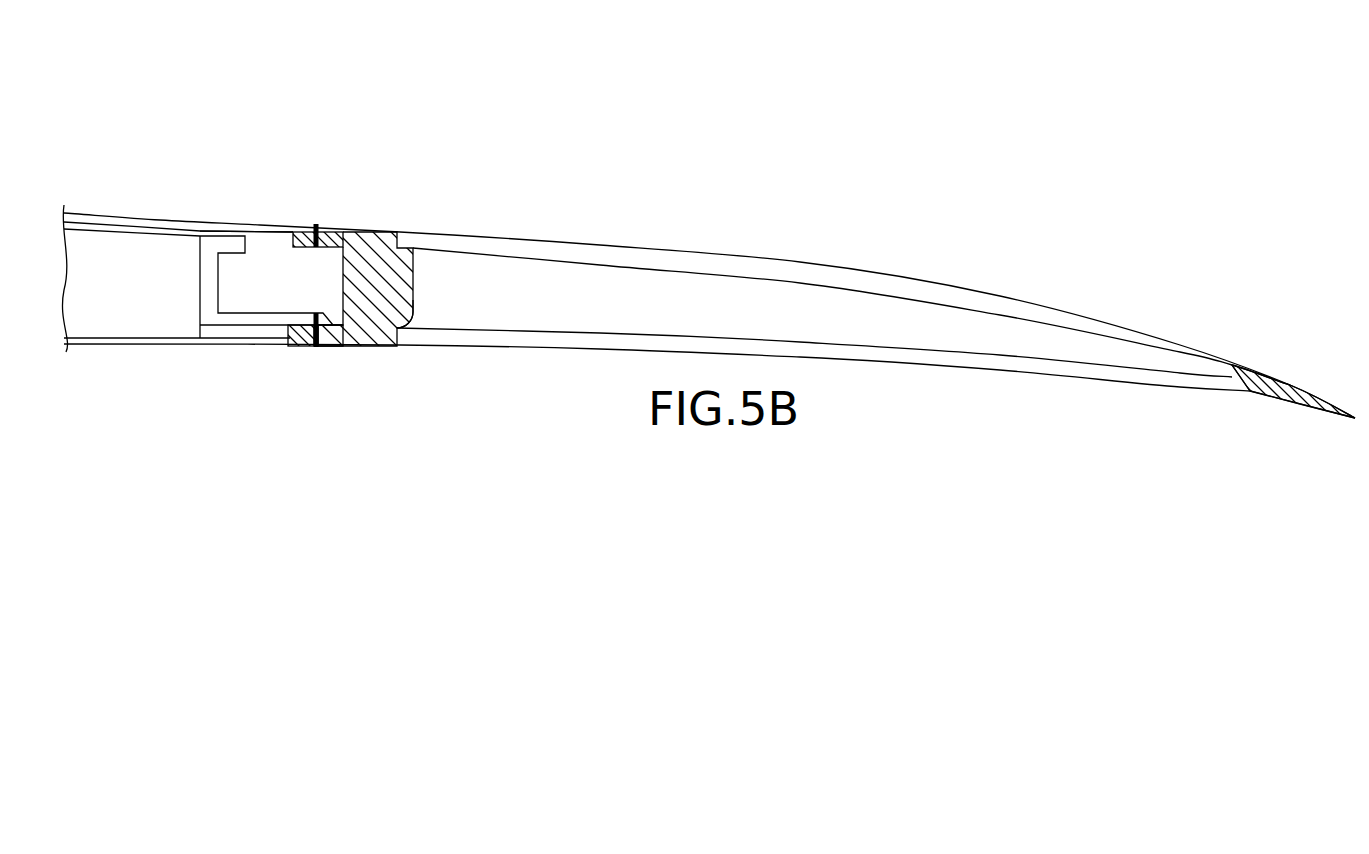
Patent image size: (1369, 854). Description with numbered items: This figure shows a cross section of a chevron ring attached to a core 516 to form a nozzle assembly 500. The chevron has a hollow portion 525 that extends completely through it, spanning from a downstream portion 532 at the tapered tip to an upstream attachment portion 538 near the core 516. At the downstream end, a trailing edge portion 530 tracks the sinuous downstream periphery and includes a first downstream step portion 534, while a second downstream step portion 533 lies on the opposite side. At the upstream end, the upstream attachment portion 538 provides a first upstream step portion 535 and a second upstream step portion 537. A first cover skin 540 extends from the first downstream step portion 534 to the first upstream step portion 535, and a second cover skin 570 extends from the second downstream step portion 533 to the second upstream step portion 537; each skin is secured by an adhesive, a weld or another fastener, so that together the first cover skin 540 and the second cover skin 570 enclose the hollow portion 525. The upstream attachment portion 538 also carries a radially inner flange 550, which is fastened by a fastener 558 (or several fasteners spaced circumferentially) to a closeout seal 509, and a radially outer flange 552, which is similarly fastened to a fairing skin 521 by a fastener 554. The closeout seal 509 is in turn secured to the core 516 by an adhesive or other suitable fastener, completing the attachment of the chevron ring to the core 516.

The nozzle assembly 500 is at (90, 108).
The core 516 is at (158, 290).
The fairing skin 521 is at (205, 222).
The closeout seal 509 is at (208, 288).
The radially outer flange 552 is at (300, 232).
The fastener 554 is at (318, 232).
The first upstream step portion 535 is at (393, 232).
The second upstream step portion 537 is at (414, 312).
The radially inner flange 550 is at (292, 346).
The fastener 558 is at (315, 346).
The upstream attachment portion 538 is at (370, 346).
The first cover skin 540 is at (670, 260).
The second cover skin 570 is at (483, 338).
The hollow portion 525 is at (832, 316).
The trailing edge portion 530 is at (1297, 383).
The first downstream step portion 534 is at (1268, 367).
The second downstream step portion 533 is at (1250, 392).
The downstream portion 532 is at (1283, 397).